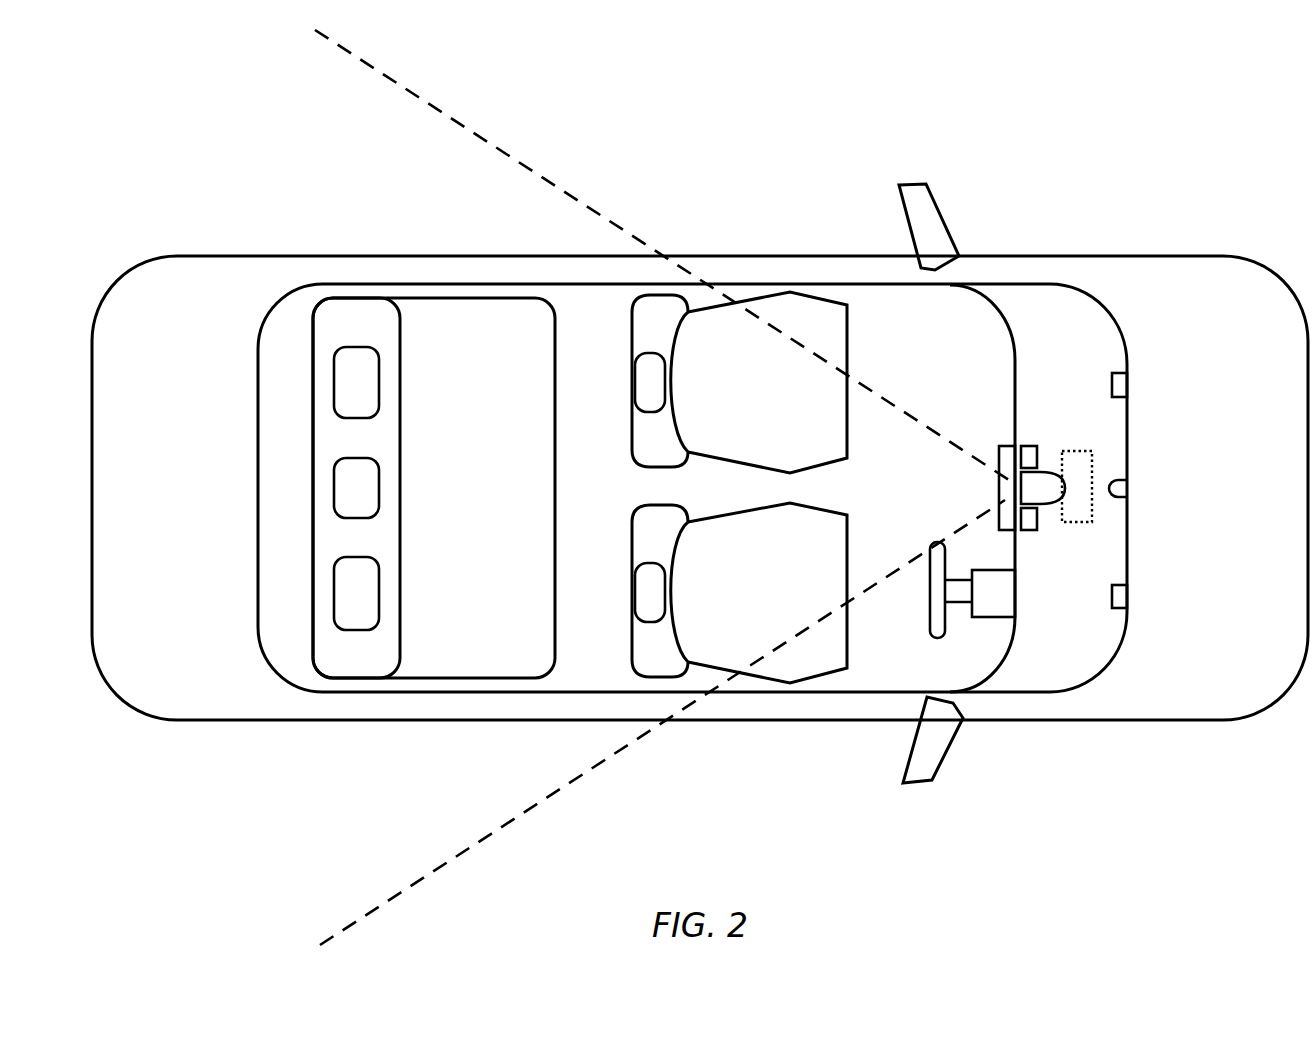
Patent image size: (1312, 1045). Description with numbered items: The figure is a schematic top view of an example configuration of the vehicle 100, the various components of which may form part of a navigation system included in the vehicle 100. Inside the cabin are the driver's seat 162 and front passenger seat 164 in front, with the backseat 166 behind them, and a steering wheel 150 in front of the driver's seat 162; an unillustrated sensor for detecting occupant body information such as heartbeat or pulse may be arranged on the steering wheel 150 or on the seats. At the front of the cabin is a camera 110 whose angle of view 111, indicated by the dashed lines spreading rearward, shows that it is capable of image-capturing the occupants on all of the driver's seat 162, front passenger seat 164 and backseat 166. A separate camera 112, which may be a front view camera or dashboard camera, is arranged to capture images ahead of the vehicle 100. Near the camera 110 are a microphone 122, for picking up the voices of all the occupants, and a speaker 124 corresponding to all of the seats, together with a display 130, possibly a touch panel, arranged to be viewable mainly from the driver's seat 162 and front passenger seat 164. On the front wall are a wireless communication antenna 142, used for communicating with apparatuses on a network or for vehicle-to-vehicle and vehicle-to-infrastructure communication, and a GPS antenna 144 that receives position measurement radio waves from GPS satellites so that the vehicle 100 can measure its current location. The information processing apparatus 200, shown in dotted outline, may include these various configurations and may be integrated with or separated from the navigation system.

The vehicle 100 is at (1157, 256).
The camera 110 is at (1050, 486).
The angle of view 111 is at (630, 238).
The camera 112 is at (1128, 487).
The microphone 122 is at (1030, 532).
The speaker 124 is at (1037, 453).
The display 130 is at (1005, 447).
The wireless communication antenna 142 is at (1128, 385).
The GPS antenna 144 is at (1128, 597).
The steering wheel 150 is at (947, 637).
The driver's seat 162 is at (807, 670).
The front passenger seat 164 is at (811, 313).
The backseat 166 is at (452, 313).
The information processing apparatus 200 is at (1093, 458).